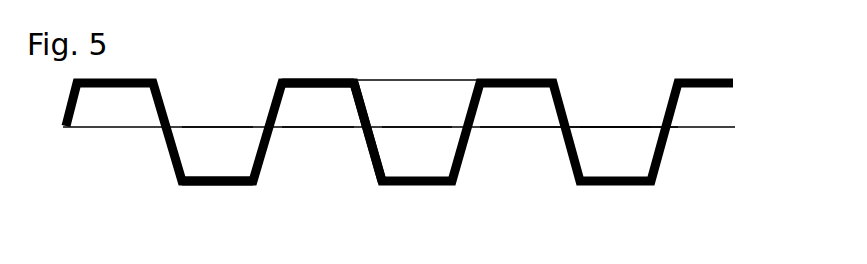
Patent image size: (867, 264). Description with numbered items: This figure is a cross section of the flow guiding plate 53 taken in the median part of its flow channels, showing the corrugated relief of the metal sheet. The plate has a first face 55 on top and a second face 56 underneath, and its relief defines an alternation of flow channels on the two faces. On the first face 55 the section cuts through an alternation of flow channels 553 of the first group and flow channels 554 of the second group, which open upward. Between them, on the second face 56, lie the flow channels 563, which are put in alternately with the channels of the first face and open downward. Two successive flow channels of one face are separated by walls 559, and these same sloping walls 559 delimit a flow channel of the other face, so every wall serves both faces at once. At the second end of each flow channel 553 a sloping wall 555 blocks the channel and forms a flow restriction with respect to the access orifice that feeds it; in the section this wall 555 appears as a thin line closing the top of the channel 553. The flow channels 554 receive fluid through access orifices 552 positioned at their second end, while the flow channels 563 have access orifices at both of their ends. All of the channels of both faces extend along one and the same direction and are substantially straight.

The flow guiding plate 53 is at (705, 195).
The first face 55 is at (307, 79).
The second face 56 is at (213, 186).
The access orifices 552 is at (617, 108).
The flow channels 553 is at (437, 130).
The flow channels 554 is at (232, 167).
The sloping wall 555 is at (417, 80).
The walls 559 is at (368, 110).
The flow channels 563 is at (335, 168).